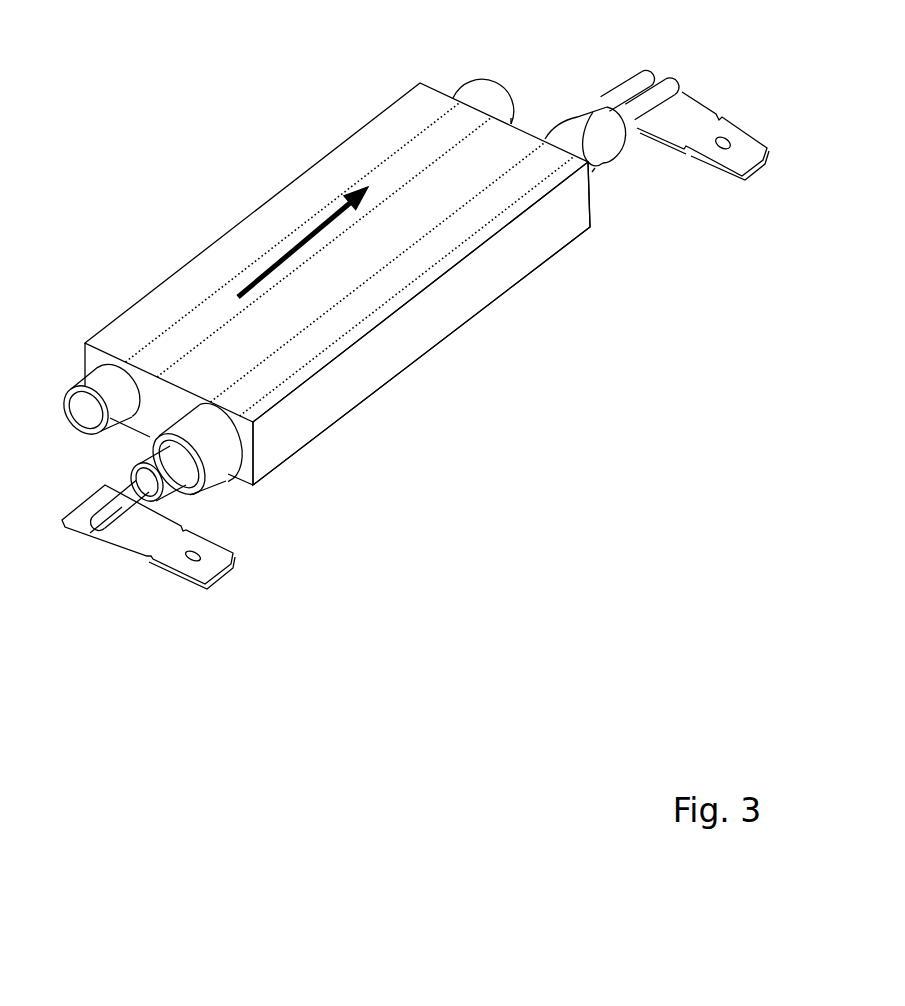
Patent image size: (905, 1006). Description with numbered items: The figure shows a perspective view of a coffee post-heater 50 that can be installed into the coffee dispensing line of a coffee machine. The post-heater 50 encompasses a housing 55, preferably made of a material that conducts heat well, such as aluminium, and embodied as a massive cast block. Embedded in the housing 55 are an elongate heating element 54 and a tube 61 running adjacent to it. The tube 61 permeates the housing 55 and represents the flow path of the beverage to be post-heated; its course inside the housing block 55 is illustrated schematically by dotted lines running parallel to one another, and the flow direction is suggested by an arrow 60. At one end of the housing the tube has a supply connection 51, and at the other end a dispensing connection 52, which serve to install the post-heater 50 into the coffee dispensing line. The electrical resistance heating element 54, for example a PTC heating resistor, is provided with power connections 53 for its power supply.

The coffee post-heater 50 is at (724, 476).
The supply connection 51 is at (88, 426).
The dispensing connection 52 is at (509, 76).
The power connections 53 is at (441, 350).
The heating element 54 is at (357, 319).
The housing 55 is at (421, 323).
The arrow 60 is at (275, 217).
The tube 61 is at (324, 259).